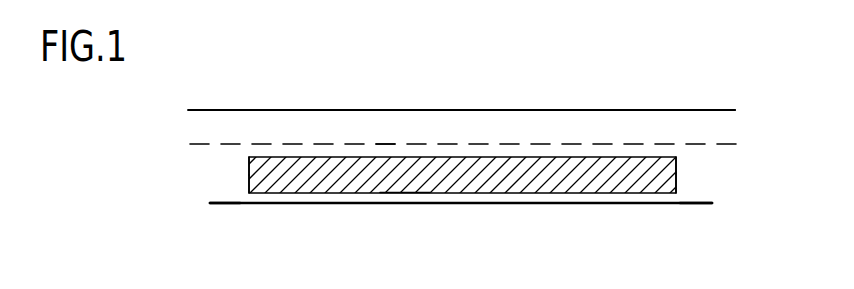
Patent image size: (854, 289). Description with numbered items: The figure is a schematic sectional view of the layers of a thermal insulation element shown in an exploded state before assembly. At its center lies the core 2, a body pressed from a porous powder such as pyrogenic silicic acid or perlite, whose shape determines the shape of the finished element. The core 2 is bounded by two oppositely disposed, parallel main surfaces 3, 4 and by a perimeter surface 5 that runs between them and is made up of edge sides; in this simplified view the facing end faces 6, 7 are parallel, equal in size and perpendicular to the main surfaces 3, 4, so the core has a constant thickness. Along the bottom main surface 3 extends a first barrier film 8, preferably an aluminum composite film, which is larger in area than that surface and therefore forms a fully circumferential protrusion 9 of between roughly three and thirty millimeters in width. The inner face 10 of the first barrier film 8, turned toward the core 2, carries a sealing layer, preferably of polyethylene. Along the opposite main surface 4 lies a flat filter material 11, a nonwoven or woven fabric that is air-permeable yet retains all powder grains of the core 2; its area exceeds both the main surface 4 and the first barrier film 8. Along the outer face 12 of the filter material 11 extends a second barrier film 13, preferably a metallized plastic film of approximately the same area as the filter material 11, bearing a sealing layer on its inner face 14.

The core 2 is at (248, 170).
The main surface 3 is at (450, 157).
The main surface 4 is at (402, 193).
The perimeter surface 5 is at (676, 167).
The end face 6 is at (248, 182).
The end face 7 is at (676, 179).
The first barrier film 8 is at (467, 204).
The protrusion 9 is at (695, 202).
The inner face 10 is at (212, 205).
The filter material 11 is at (325, 144).
The outer face 12 is at (395, 144).
The second barrier film 13 is at (495, 110).
The inner face 14 is at (549, 110).